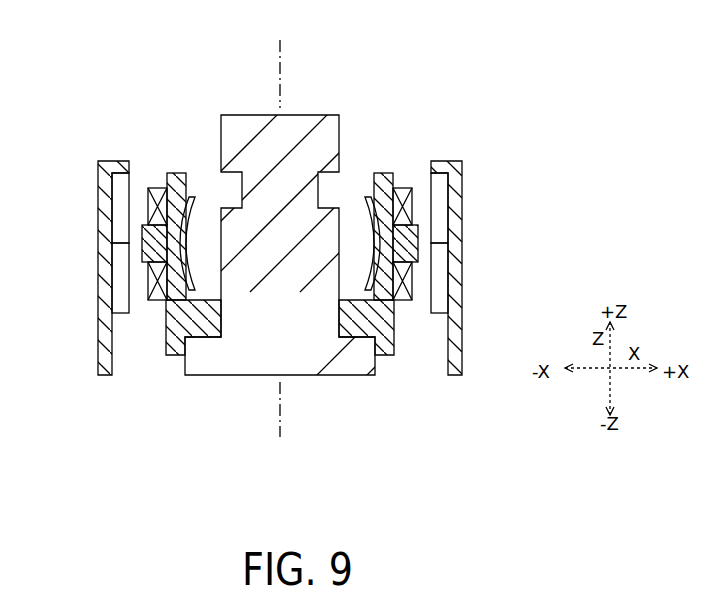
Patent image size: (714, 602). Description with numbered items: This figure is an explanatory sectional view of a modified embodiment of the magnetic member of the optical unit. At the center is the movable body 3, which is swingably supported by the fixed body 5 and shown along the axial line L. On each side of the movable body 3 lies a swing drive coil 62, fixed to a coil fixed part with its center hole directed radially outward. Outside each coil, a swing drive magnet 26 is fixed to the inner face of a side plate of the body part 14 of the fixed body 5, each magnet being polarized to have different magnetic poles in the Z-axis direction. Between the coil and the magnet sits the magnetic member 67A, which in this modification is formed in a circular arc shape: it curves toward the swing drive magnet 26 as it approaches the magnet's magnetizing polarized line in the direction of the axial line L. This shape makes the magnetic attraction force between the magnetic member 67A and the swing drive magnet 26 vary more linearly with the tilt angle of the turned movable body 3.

The movable body 3 is at (337, 110).
The fixed body 5 is at (279, 230).
The body part 14 is at (97, 187).
The swing drive magnet 26 is at (120, 183).
The swing drive coil 62 is at (158, 205).
The magnetic member 67A is at (196, 198).
The axial line L is at (283, 51).